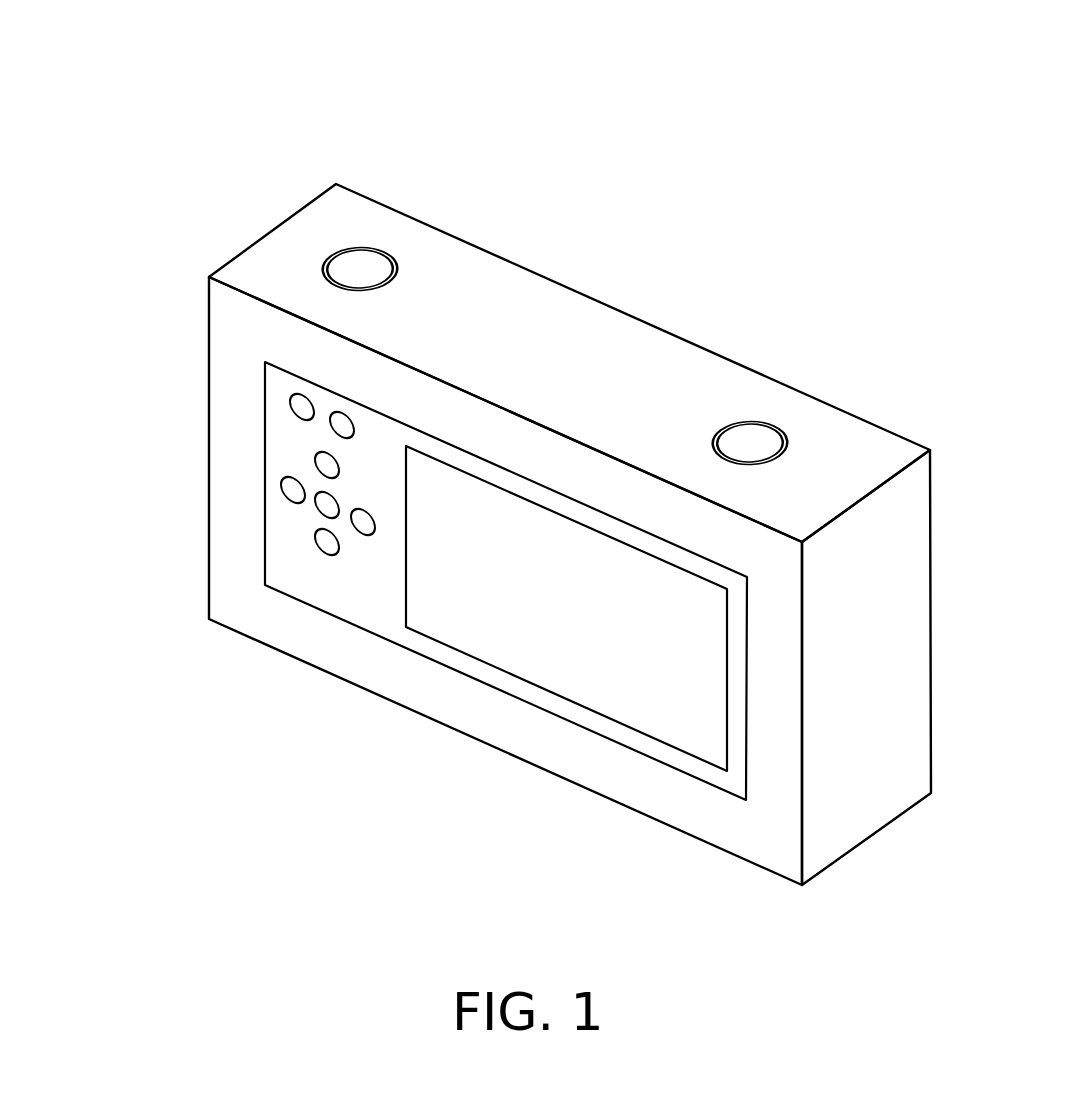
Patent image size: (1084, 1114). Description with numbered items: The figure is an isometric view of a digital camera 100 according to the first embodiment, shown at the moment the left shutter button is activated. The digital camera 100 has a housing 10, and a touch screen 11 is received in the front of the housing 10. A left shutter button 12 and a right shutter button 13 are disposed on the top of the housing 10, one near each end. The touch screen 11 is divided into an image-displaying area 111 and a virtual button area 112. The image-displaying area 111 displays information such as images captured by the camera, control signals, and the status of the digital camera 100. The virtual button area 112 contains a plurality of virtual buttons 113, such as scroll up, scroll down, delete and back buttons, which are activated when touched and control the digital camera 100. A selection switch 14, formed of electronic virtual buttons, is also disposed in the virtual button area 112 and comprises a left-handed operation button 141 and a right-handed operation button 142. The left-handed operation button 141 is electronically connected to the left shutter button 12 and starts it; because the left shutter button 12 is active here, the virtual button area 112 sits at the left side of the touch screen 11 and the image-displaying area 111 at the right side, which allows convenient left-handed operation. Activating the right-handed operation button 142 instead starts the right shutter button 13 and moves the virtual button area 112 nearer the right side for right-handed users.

The digital camera 100 is at (494, 450).
The housing 10 is at (595, 347).
The touch screen 11 is at (371, 786).
The image-displaying area 111 is at (459, 624).
The virtual button area 112 is at (320, 587).
The virtual buttons 113 is at (293, 488).
The left shutter button 12 is at (348, 268).
The right shutter button 13 is at (750, 443).
The selection switch 14 is at (105, 301).
The left-handed operation button 141 is at (302, 411).
The right-handed operation button 142 is at (338, 418).